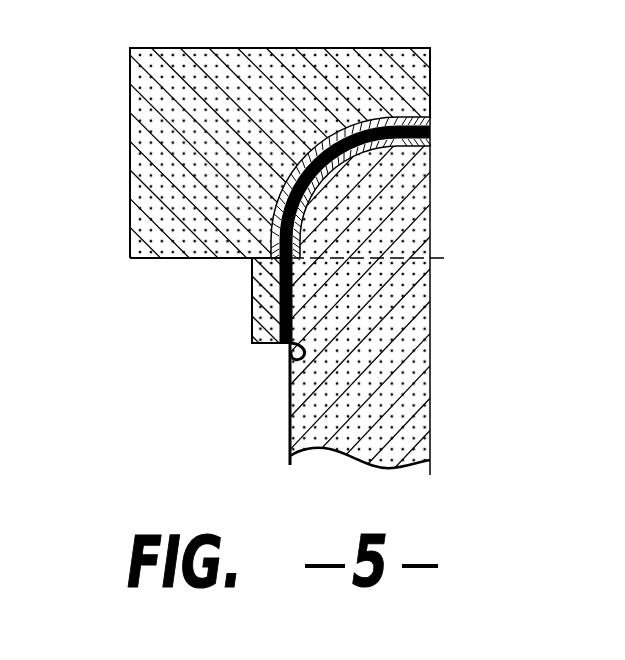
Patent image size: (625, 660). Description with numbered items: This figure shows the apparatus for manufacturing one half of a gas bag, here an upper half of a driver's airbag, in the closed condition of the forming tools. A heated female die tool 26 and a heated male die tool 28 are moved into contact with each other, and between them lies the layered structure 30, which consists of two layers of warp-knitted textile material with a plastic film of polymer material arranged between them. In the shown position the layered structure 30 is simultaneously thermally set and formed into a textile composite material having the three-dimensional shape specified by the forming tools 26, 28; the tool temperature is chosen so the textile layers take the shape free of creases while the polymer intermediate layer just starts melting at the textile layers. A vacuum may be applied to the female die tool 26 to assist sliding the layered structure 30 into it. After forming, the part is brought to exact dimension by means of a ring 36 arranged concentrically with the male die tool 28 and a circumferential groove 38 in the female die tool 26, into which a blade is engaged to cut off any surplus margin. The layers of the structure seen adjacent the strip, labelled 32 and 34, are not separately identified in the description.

The female die tool 26 is at (132, 108).
The male die tool 28 is at (418, 333).
The layered structure 30 is at (432, 130).
The outer adhesive layer 32 is at (413, 120).
The inner adhesive layer 34 is at (418, 143).
The ring 36 is at (262, 316).
The circumferential groove 38 is at (286, 350).